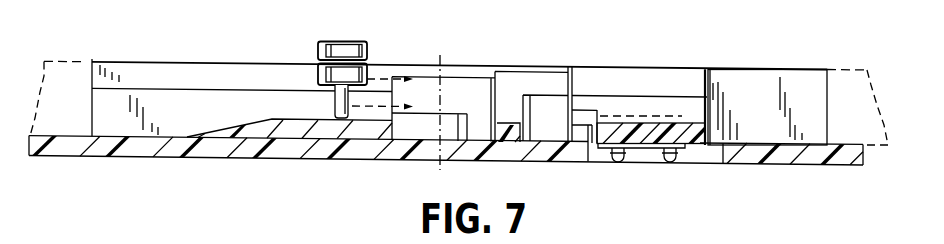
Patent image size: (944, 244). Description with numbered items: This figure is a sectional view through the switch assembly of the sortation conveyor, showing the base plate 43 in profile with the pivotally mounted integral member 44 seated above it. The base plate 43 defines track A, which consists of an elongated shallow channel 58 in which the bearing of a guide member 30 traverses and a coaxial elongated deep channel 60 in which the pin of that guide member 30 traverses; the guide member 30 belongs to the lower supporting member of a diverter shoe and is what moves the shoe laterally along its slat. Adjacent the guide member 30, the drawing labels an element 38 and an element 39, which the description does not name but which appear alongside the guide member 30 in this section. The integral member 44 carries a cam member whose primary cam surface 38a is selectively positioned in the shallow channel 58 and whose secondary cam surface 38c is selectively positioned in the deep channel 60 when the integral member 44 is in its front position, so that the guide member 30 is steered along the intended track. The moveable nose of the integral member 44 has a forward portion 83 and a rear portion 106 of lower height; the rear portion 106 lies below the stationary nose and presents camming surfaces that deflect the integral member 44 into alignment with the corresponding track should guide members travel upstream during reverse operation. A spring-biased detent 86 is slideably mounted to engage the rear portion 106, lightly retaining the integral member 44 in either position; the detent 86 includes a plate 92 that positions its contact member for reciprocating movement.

The guide member 30 is at (349, 78).
The latch pin head 38 is at (318, 76).
The primary cam surface 38a is at (491, 102).
The secondary cam surface 38c is at (433, 138).
The pin stem 39 is at (336, 112).
The base plate 43 is at (108, 149).
The integral member 44 is at (337, 161).
The shallow channel 58 is at (167, 77).
The deep channel 60 is at (108, 108).
The forward portion 83 is at (548, 101).
The spring-biased detent 86 is at (647, 150).
The plate 92 is at (648, 150).
The rear portion 106 is at (574, 141).